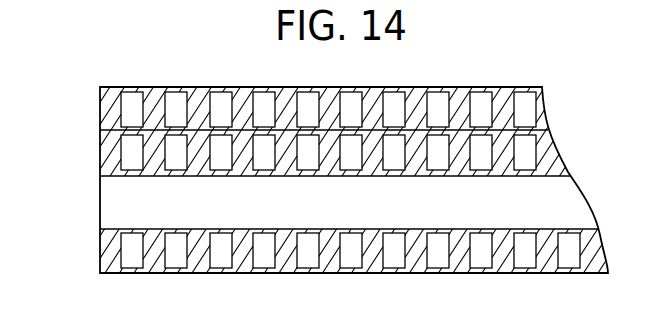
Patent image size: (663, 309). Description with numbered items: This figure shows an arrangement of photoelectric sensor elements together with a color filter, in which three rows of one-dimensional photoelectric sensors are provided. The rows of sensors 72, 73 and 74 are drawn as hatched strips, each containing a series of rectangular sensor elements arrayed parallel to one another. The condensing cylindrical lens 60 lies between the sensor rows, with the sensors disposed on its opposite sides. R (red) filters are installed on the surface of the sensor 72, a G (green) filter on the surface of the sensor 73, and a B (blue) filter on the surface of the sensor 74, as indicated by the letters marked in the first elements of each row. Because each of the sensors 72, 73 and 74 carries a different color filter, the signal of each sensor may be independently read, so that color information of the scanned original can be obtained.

The one-dimensional photoelectric sensor 72 is at (104, 113).
The one-dimensional photoelectric sensor 73 is at (104, 154).
The condensing cylindrical lens 60 is at (104, 203).
The one-dimensional photoelectric sensor 74 is at (104, 251).